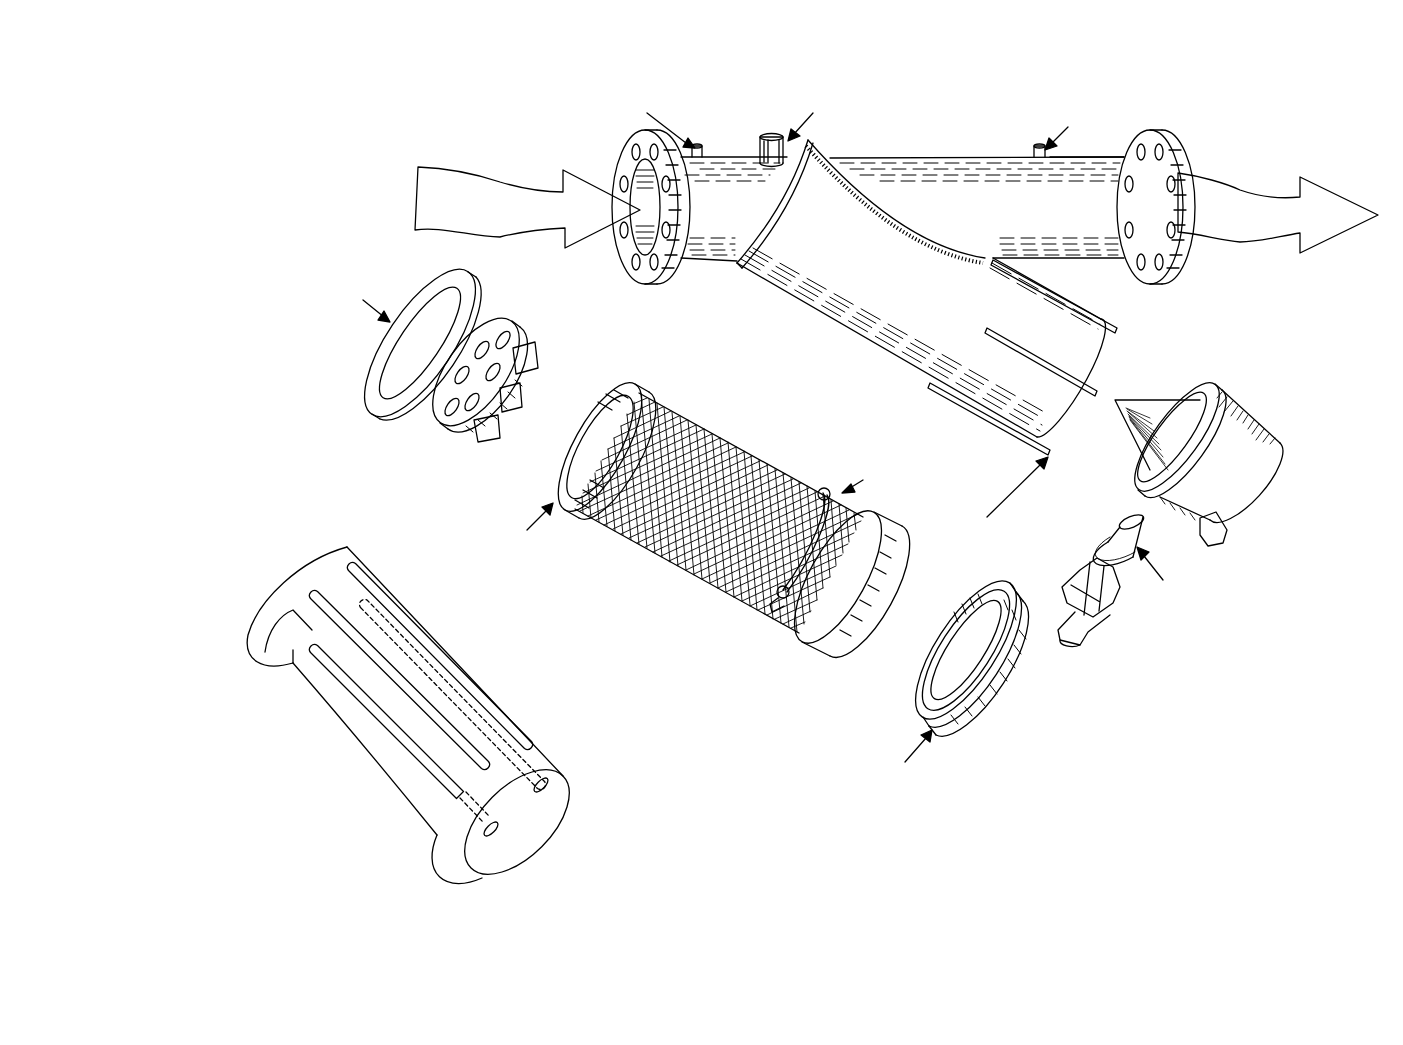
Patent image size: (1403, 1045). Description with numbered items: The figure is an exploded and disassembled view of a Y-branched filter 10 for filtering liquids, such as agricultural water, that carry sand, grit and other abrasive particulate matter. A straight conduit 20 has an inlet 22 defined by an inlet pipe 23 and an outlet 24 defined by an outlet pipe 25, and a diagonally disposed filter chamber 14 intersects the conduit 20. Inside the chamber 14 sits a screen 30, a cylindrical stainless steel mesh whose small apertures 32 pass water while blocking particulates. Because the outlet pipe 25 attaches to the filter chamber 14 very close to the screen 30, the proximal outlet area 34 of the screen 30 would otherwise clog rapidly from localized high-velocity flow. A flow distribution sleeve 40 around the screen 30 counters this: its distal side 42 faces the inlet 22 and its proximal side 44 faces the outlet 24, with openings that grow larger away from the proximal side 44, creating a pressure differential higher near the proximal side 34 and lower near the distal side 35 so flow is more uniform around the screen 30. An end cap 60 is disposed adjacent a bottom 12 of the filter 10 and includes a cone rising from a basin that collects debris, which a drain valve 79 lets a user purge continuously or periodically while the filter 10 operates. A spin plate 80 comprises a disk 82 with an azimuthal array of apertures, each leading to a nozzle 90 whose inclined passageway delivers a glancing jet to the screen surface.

The Y-branched filter 10 is at (338, 156).
The bottom 12 is at (1087, 365).
The filter chamber 14 is at (852, 351).
The straight conduit 20 is at (1061, 158).
The inlet 22 is at (632, 230).
The inlet pipe 23 is at (737, 157).
The outlet 24 is at (1180, 166).
The outlet pipe 25 is at (1015, 157).
The screen 30 is at (715, 604).
The small apertures 32 is at (637, 542).
The proximal outlet area 34 is at (687, 424).
The distal side 35 is at (673, 563).
The flow distribution sleeve 40 is at (575, 819).
The distal side 42 is at (437, 848).
The proximal side 44 is at (530, 732).
The end cap 60 is at (1261, 515).
The drain valve 79 is at (1118, 629).
The spin plate 80 is at (552, 347).
The disk 82 is at (497, 318).
The nozzle 90 is at (487, 440).